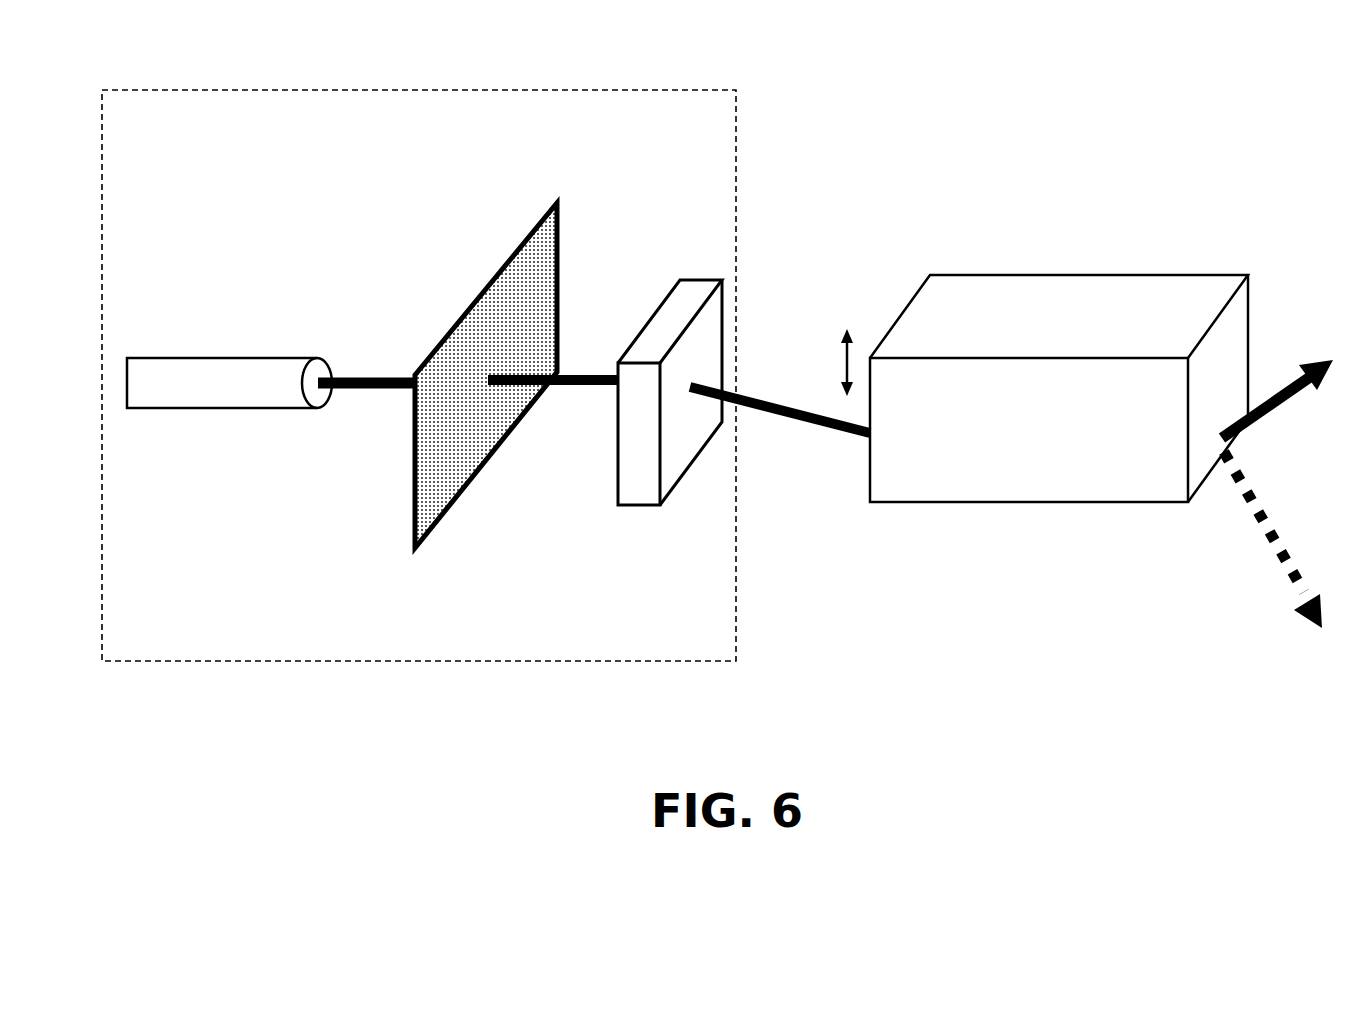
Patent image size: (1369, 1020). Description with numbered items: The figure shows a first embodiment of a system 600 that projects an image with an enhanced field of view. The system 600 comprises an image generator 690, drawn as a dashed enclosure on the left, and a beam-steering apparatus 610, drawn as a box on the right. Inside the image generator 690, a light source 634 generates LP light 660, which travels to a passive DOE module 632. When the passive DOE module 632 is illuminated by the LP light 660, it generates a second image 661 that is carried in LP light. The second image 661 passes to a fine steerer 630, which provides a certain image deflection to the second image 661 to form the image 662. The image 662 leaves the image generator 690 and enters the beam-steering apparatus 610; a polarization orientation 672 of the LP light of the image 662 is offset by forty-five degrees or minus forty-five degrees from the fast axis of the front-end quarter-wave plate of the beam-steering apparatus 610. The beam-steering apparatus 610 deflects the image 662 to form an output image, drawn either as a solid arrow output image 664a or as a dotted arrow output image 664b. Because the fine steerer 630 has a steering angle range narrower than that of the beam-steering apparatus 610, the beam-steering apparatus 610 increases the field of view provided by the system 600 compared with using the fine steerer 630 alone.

The system 600 is at (1033, 667).
The image generator 690 is at (419, 390).
The light source 634 is at (229, 351).
The LP light 660 is at (367, 353).
The passive DOE module 632 is at (442, 372).
The second image 661 is at (553, 347).
The fine steerer 630 is at (646, 354).
The image 662 is at (780, 389).
The polarization orientation 672 is at (842, 351).
The beam-steering apparatus 610 is at (1059, 324).
The output image 664a is at (1277, 379).
The output image 664b is at (1254, 540).